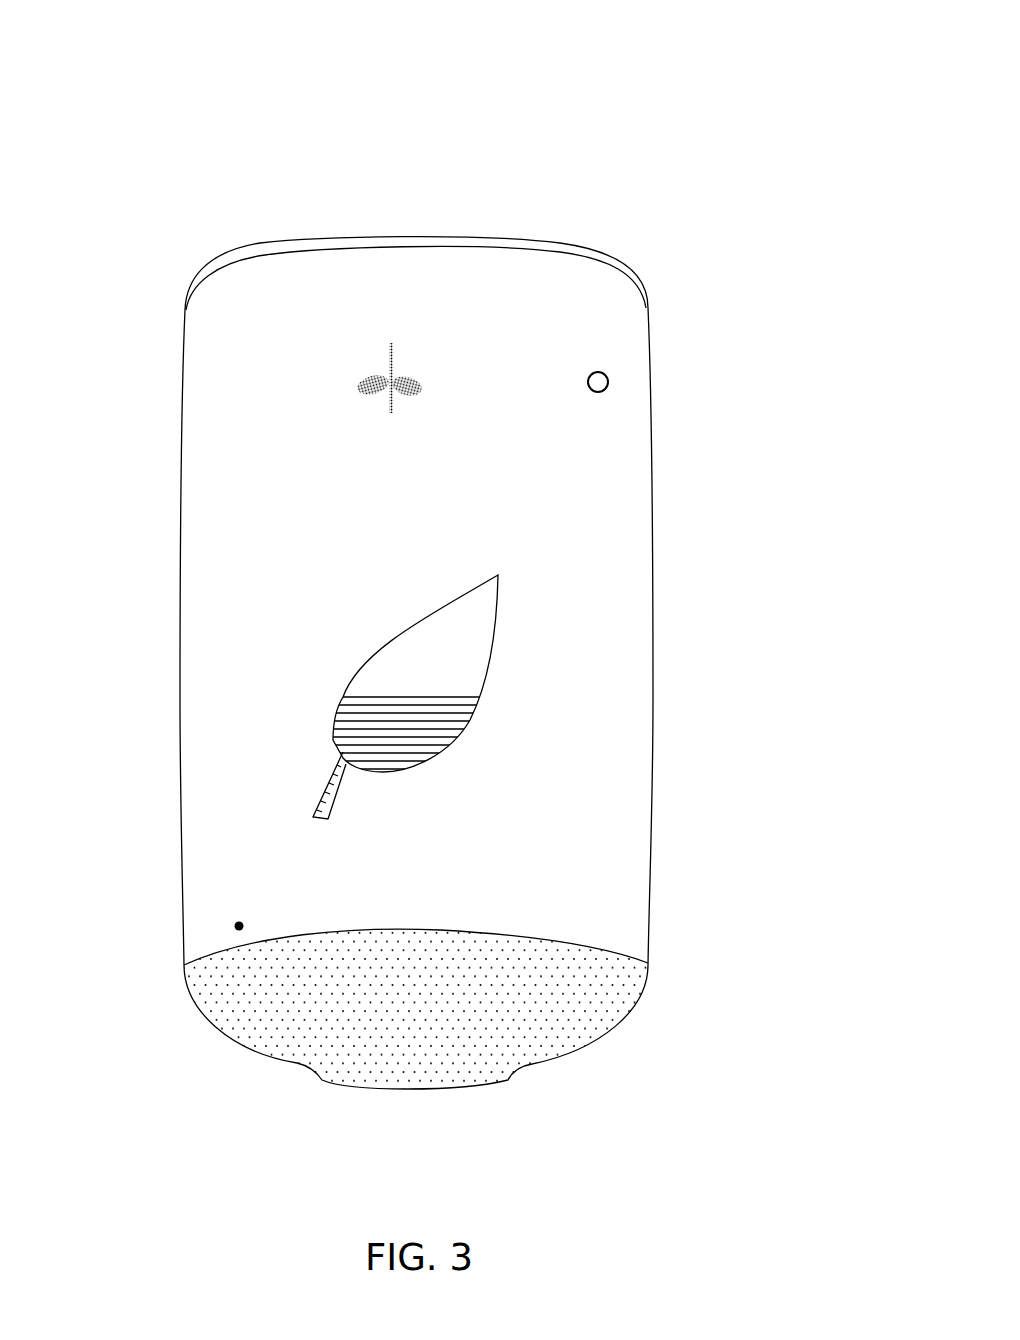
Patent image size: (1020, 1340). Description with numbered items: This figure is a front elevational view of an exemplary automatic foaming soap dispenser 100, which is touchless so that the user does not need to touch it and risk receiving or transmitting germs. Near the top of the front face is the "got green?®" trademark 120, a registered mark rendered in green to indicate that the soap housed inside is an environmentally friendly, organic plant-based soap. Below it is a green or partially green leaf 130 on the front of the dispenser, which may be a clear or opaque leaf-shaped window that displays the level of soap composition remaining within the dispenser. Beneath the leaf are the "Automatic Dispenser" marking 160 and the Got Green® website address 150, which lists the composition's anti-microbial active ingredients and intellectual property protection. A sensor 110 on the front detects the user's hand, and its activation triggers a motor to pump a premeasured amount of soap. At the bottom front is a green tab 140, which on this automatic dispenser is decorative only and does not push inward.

The dispenser 100 is at (647, 182).
The sensor 110 is at (239, 926).
The "got green?®" trademark 120 is at (587, 436).
The leaf 130 is at (470, 712).
The green tab 140 is at (597, 1038).
The website address 150 is at (562, 898).
The "Automatic Dispenser" marking 160 is at (537, 852).